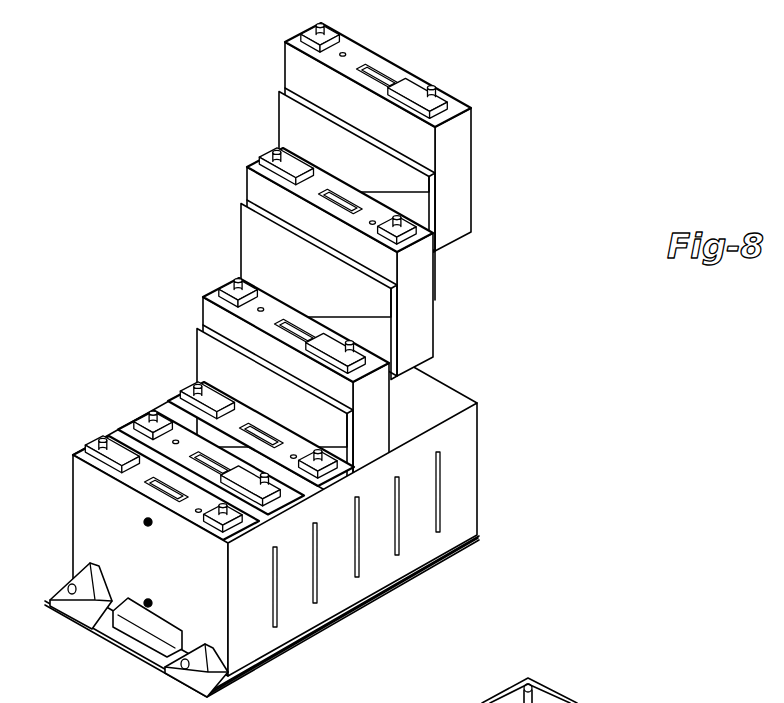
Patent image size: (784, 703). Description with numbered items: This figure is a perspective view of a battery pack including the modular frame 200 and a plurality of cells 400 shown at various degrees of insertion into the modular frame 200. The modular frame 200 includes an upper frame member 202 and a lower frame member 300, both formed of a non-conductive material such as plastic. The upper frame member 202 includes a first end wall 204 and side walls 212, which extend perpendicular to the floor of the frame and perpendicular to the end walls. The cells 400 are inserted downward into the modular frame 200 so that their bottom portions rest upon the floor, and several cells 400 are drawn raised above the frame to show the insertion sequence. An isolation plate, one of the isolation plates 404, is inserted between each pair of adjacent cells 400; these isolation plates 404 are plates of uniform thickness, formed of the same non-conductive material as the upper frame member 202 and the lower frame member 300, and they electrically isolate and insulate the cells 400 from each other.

The modular frame 200 is at (590, 385).
The upper frame member 202 is at (278, 342).
The first end wall 204 is at (108, 500).
The side walls 212 is at (422, 492).
The lower frame member 300 is at (437, 571).
The cells 400 is at (246, 274).
The isolation plates 404 is at (292, 107).